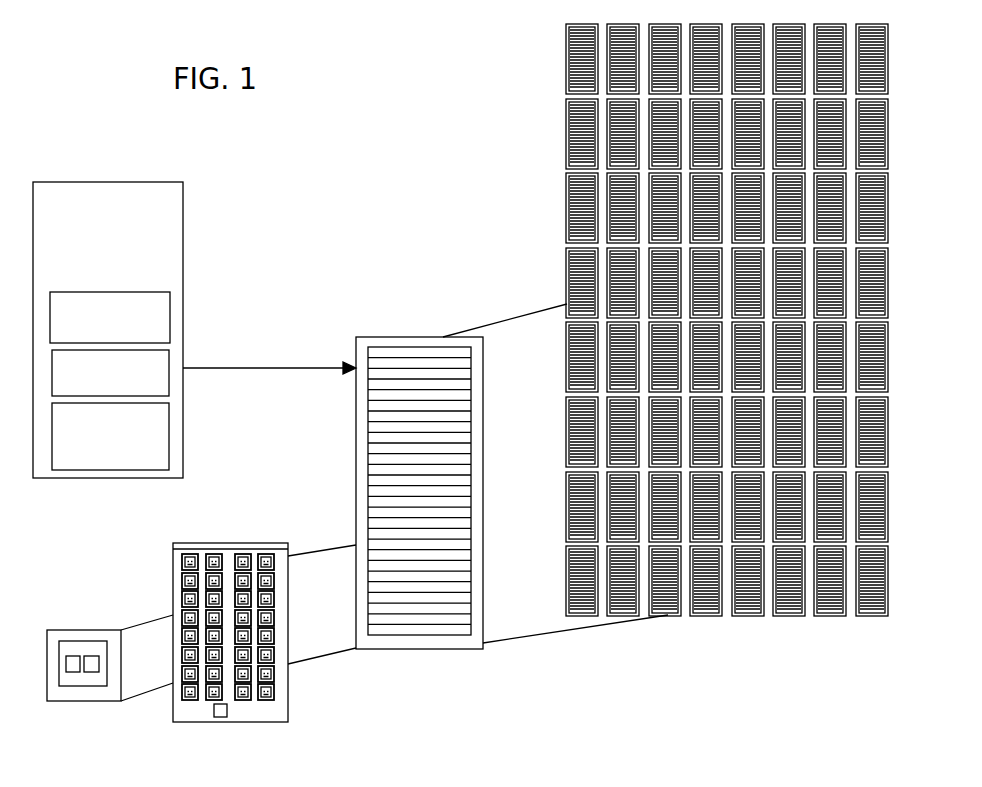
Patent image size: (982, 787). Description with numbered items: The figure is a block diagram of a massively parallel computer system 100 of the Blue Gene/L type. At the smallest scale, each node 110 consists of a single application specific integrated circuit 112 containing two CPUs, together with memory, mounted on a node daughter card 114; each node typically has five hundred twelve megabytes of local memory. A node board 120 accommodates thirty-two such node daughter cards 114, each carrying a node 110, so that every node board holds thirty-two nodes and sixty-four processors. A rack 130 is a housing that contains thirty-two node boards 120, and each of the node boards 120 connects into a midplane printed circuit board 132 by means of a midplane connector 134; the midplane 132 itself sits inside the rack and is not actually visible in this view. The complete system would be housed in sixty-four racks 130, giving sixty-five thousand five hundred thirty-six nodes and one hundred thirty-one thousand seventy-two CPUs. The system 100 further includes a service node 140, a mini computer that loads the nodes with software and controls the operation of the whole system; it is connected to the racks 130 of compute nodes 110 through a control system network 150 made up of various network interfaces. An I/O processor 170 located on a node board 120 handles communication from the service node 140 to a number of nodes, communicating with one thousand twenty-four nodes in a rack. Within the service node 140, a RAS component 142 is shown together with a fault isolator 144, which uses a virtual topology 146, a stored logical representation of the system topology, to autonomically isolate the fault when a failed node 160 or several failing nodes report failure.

The massively parallel computer system 100 is at (230, 186).
The node 110 is at (65, 630).
The application specific integrated circuit (ASIC) 112 is at (62, 686).
The node daughter card 114 is at (191, 702).
The node board 120 is at (309, 627).
The rack 130 is at (606, 336).
The midplane printed circuit board 132 is at (483, 540).
The midplane connector 134 is at (172, 549).
The service node 140 is at (130, 278).
The RAS application 142 is at (131, 334).
The fault isolator 144 is at (131, 390).
The virtual topology 146 is at (128, 465).
The control system network 150 is at (223, 367).
The failed node 160 is at (270, 672).
The I/O processor 170 is at (221, 717).